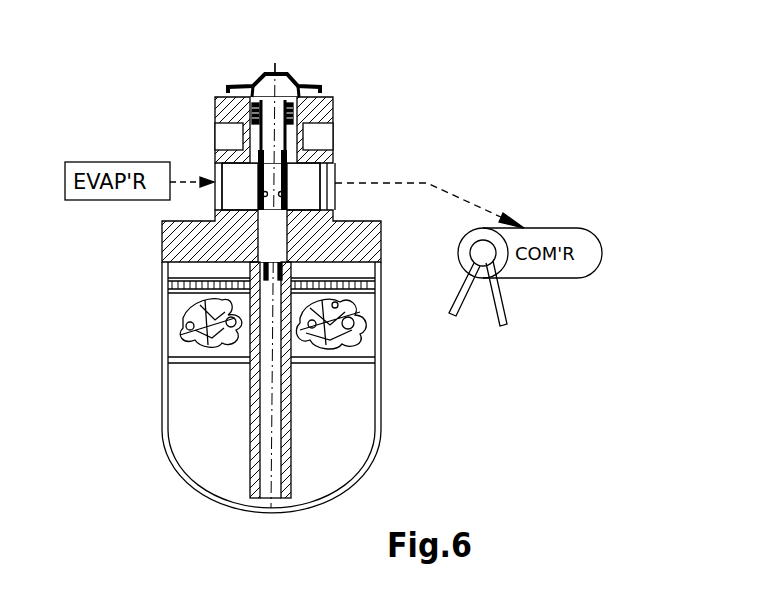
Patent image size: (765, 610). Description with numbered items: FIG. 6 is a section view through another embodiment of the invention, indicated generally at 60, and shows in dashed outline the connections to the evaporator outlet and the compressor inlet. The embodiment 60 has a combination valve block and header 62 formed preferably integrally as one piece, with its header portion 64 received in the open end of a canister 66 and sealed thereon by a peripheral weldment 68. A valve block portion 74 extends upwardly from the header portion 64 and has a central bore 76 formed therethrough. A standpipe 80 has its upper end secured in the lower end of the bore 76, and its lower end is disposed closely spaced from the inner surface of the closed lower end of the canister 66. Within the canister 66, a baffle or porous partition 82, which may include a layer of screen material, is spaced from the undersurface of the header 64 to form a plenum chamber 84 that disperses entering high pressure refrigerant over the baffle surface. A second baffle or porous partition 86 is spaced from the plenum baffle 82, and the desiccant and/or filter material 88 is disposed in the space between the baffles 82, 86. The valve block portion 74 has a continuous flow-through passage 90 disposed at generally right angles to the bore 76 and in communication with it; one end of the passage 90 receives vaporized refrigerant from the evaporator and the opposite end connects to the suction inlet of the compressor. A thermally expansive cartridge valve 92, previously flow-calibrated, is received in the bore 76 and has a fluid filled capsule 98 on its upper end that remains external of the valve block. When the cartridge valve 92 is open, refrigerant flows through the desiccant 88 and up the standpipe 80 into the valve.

The refrigerant receiver assembly 60 is at (278, 361).
The combination valve block and header 62 is at (294, 266).
The header portion 64 is at (163, 225).
The canister 66 is at (162, 413).
The peripheral weldment 68 is at (165, 237).
The valve block portion 74 is at (214, 104).
The central bore 76 is at (290, 228).
The standpipe 80 is at (289, 380).
The baffle or porous partition 82 is at (195, 305).
The plenum chamber 84 is at (345, 280).
The second baffle or porous partition 86 is at (340, 365).
The desiccant and/or filter material 88 is at (327, 323).
The flow-through passage 90 is at (332, 178).
The thermally expansive cartridge valve 92 is at (243, 180).
The fluid filled capsule 98 is at (293, 90).